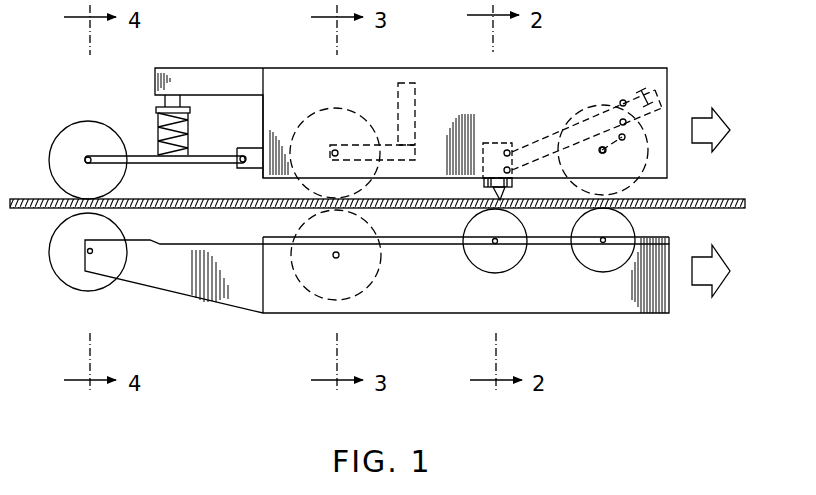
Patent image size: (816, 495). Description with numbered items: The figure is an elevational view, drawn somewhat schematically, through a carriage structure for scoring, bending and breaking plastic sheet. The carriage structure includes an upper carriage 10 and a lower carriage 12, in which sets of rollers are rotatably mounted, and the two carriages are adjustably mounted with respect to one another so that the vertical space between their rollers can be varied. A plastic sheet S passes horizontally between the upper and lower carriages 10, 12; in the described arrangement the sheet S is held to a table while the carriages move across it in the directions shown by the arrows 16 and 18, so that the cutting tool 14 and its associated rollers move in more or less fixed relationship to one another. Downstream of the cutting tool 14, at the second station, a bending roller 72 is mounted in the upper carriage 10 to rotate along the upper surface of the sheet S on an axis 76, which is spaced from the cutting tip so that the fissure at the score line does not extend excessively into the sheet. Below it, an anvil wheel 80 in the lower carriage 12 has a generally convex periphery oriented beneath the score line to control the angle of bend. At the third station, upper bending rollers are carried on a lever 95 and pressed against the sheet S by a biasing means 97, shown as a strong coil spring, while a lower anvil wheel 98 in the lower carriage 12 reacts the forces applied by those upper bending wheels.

The upper carriage 10 is at (636, 62).
The lower carriage 12 is at (608, 313).
The cutting tool 14 is at (484, 136).
The arrow 16 is at (700, 128).
The arrow 18 is at (703, 270).
The bending roller 72 is at (348, 110).
The axis 76 is at (332, 150).
The anvil wheel 80 is at (302, 298).
The lever 95 is at (205, 141).
The biasing means 97 is at (158, 125).
The lower anvil wheel 98 is at (60, 281).
The plastic sheet S is at (709, 198).